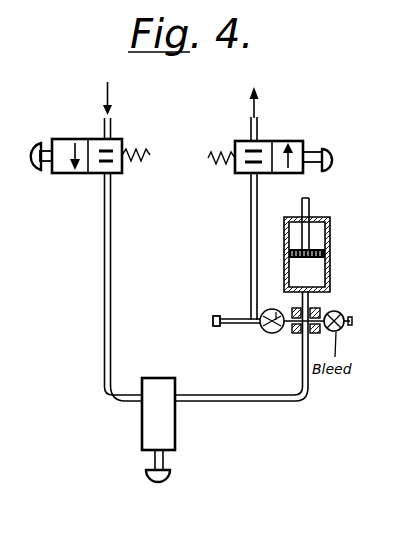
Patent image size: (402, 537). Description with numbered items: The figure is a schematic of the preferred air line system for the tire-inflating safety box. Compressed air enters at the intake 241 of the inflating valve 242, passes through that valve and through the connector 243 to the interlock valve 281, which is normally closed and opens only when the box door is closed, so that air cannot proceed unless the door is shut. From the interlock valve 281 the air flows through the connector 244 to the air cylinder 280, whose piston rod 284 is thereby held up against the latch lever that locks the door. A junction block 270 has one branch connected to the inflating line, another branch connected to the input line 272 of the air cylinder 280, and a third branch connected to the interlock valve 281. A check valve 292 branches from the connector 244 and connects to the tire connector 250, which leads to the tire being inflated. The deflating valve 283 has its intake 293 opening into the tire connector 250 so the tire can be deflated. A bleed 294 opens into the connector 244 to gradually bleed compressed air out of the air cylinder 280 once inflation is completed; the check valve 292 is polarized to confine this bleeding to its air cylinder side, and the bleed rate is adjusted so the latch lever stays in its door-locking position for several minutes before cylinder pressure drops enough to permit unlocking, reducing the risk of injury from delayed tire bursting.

The intake 241 is at (114, 131).
The inflating valve 242 is at (72, 140).
The connector 243 is at (107, 265).
The connector 244 is at (258, 403).
The tire connector 250 is at (235, 318).
The junction block 270 is at (294, 337).
The input line 272 is at (302, 299).
The air cylinder 280 is at (330, 247).
The interlock valve 281 is at (168, 367).
The deflating valve 283 is at (241, 142).
The piston rod 284 is at (302, 206).
The check valve 292 is at (280, 331).
The intake 293 is at (250, 198).
The bleed 294 is at (340, 306).